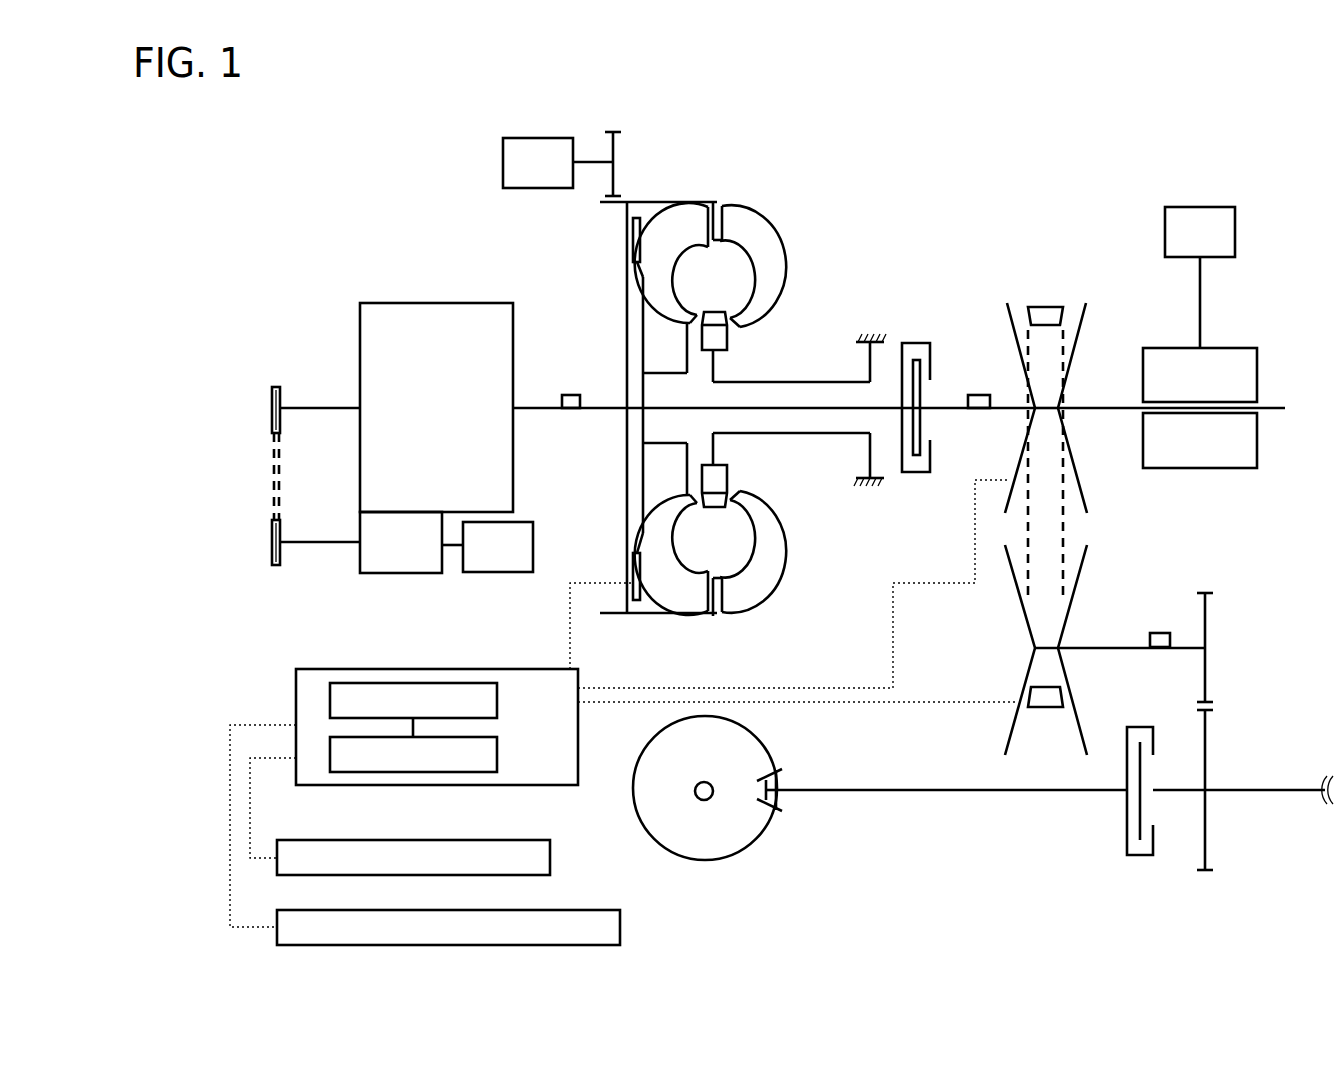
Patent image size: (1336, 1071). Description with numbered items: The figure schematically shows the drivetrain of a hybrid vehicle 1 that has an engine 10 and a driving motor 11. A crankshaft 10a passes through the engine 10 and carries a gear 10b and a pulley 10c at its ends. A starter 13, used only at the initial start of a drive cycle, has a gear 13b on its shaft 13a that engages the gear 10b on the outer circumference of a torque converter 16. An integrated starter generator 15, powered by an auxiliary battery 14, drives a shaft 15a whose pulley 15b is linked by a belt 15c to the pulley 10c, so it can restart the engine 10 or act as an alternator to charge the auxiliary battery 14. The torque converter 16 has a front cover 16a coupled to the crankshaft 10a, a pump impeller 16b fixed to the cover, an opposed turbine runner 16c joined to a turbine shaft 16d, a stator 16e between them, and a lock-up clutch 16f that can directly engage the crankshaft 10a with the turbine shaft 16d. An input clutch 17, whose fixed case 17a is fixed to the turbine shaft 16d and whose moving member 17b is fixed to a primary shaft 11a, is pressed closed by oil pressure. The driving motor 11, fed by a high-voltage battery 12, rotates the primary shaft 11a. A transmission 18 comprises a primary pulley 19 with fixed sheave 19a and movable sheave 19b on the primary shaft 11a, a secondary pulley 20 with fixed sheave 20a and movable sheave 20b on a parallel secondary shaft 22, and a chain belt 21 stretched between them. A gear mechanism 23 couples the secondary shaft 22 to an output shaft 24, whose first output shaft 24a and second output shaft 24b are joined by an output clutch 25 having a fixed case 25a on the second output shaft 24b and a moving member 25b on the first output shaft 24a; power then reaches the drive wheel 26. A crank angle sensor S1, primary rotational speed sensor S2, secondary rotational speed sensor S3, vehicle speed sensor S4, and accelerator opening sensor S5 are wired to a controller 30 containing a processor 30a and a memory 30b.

The vehicle 1 is at (926, 104).
The engine 10 is at (455, 424).
The crankshaft 10a is at (318, 406).
The gear 10b is at (601, 205).
The pulley 10c is at (275, 386).
The driving motor 11 is at (1296, 321).
The primary shaft 11a is at (1118, 406).
The high-voltage battery 12 is at (1208, 205).
The starter 13 is at (546, 137).
The shaft 13a is at (596, 161).
The gear 13b is at (615, 148).
The auxiliary battery 14 is at (505, 574).
The integrated starter generator 15 is at (425, 575).
The shaft 15a is at (313, 544).
The pulley 15b is at (275, 566).
The belt 15c is at (271, 487).
The torque converter 16 is at (732, 190).
The front cover 16a is at (641, 452).
The pump impeller 16b is at (744, 611).
The turbine runner 16c is at (702, 615).
The turbine shaft 16d is at (697, 413).
The stator 16e is at (728, 478).
The lock-up clutch 16f is at (635, 602).
The input clutch 17 is at (936, 480).
The fixed case 17a is at (903, 473).
The moving member 17b is at (931, 384).
The transmission 18 is at (1102, 524).
The primary pulley 19 is at (1012, 440).
The fixed sheave 19a is at (1010, 326).
The movable sheave 19b is at (1073, 462).
The secondary pulley 20 is at (996, 641).
The fixed sheave 20a is at (1016, 587).
The movable sheave 20b is at (1072, 695).
The belt 21 is at (1043, 314).
The secondary shaft 22 is at (1117, 647).
The gear mechanism 23 is at (1229, 704).
The output shaft 24 is at (968, 792).
The first output shaft 24a is at (1240, 788).
The second output shaft 24b is at (878, 792).
The output clutch 25 is at (1180, 852).
The fixed case 25a is at (1128, 855).
The moving member 25b is at (1137, 801).
The drive wheel 26 is at (705, 861).
The controller 30 is at (491, 668).
The processor 30a is at (498, 705).
The memory 30b is at (498, 757).
The crank angle sensor S1 is at (571, 394).
The primary rotational speed sensor S2 is at (978, 394).
The secondary rotational speed sensor S3 is at (1160, 632).
The vehicle speed sensor S4 is at (552, 858).
The accelerator opening sensor S5 is at (622, 928).